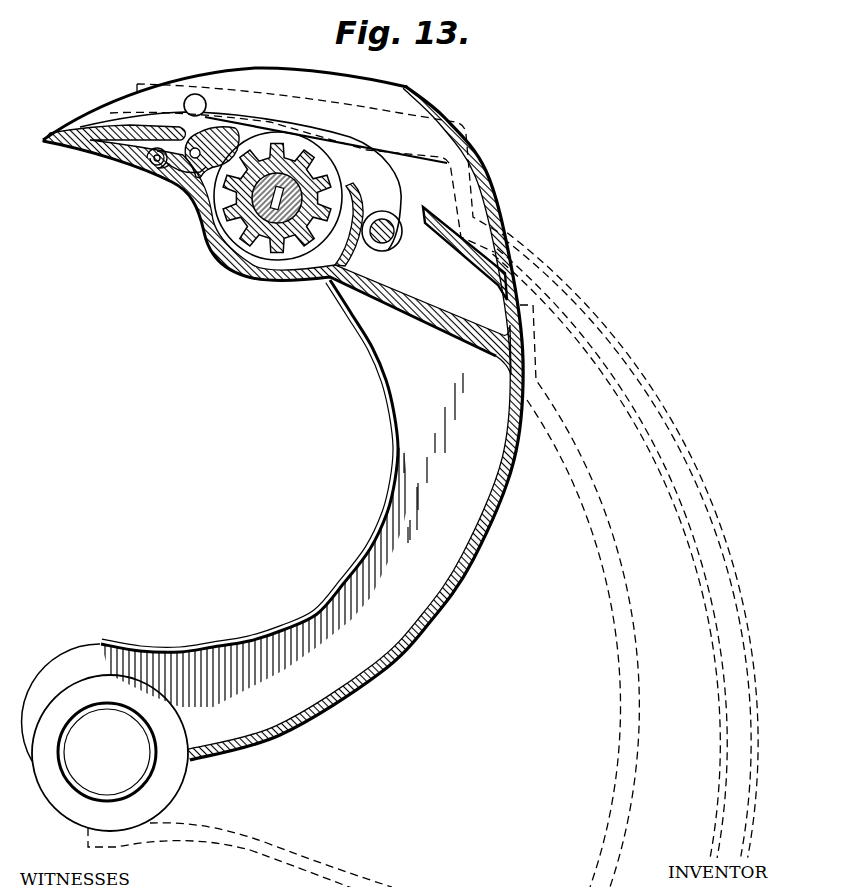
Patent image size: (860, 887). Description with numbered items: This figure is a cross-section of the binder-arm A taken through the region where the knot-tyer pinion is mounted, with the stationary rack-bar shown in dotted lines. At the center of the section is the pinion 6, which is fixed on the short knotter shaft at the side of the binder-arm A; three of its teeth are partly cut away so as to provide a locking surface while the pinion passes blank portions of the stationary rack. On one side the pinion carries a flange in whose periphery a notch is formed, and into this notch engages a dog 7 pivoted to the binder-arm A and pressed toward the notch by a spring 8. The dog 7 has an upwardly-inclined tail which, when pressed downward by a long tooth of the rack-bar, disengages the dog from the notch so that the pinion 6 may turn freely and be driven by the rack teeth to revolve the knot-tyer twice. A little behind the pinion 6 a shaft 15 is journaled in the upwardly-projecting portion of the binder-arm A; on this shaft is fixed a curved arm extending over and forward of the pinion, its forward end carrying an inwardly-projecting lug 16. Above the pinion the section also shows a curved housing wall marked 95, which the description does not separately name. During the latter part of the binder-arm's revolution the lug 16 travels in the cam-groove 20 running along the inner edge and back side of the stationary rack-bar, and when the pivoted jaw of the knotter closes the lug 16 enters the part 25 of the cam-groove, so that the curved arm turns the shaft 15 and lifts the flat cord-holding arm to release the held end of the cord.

The binder-arm A is at (242, 555).
The part of the cam-groove 25 is at (413, 486).
The pinion 6 is at (277, 198).
The housing cover curve 95 is at (240, 181).
The dog 7 is at (207, 185).
The spring 8 is at (156, 170).
The lug 16 is at (204, 94).
The shaft 15 is at (382, 244).
The cam-groove 20 is at (626, 545).